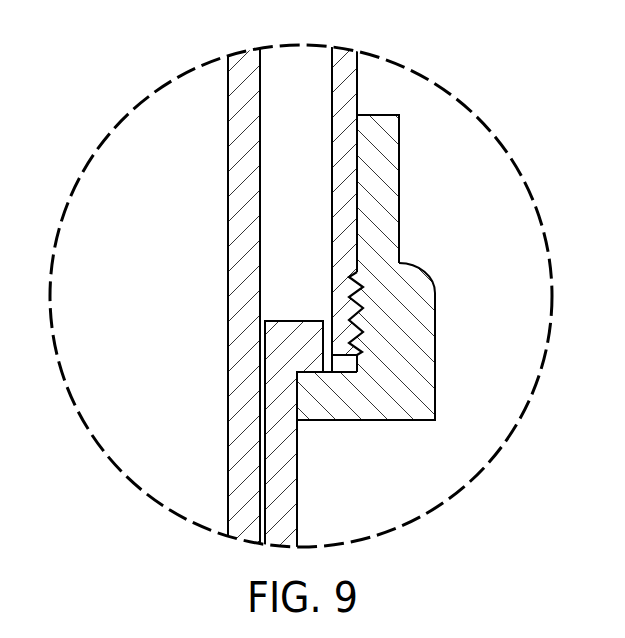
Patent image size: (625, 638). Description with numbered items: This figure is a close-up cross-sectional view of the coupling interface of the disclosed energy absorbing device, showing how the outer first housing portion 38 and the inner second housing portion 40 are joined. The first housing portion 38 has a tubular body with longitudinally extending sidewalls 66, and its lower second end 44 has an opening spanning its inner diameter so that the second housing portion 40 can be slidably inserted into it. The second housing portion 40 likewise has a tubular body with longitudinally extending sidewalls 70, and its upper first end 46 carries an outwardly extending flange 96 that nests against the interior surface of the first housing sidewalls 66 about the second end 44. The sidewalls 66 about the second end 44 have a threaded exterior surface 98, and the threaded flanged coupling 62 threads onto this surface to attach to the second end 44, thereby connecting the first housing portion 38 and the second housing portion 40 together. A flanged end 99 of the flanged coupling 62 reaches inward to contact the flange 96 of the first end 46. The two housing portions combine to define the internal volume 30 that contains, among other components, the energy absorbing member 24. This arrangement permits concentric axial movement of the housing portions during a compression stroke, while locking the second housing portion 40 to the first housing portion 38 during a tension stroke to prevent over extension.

The energy absorbing member 24 is at (242, 194).
The first housing portion 38 is at (360, 72).
The sidewalls 66 is at (352, 97).
The second end 44 is at (320, 303).
The first end 46 is at (281, 305).
The flange 96 is at (282, 342).
The threaded exterior surface 98 is at (362, 287).
The flanged coupling 62 is at (427, 352).
The internal volume 30 is at (113, 425).
The flanged end 99 is at (317, 403).
The second housing portion 40 is at (296, 502).
The sidewalls 70 is at (286, 513).